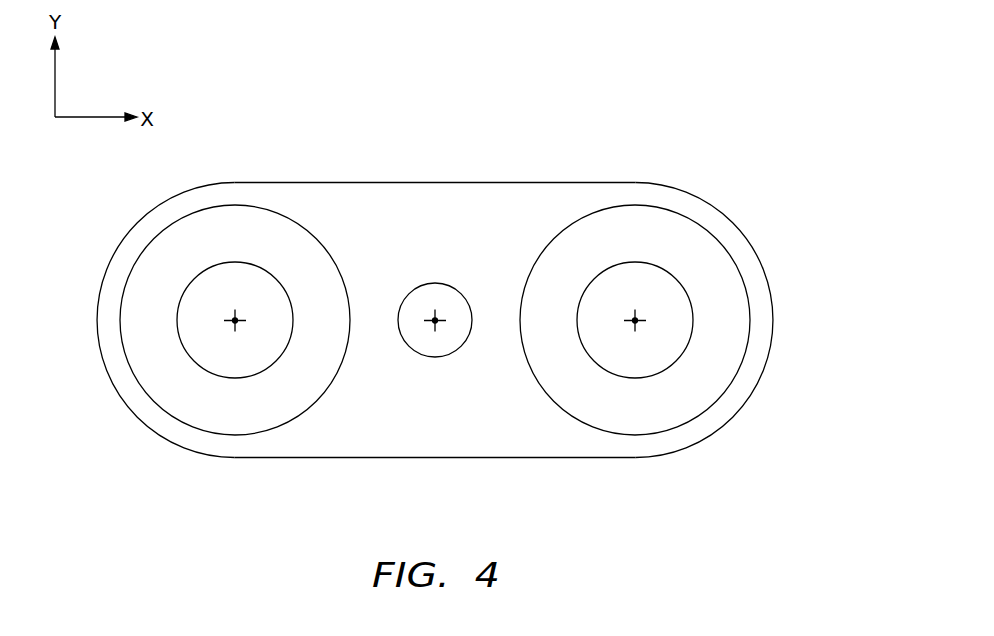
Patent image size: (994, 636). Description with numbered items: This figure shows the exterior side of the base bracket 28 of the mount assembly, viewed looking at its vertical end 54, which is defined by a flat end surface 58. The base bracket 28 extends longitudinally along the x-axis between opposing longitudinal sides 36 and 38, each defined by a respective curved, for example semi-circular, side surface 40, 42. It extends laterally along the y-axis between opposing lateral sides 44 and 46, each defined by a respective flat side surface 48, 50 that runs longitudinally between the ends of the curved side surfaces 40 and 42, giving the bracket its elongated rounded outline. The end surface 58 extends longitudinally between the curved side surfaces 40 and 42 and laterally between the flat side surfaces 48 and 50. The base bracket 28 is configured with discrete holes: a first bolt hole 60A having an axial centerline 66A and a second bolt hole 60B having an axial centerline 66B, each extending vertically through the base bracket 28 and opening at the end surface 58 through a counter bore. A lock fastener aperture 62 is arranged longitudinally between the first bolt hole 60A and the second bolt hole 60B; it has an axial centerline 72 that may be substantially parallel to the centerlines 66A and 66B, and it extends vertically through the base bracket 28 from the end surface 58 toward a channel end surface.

The base bracket 28 is at (703, 128).
The base bracket longitudinal side 36 is at (744, 320).
The curved side surface 40 is at (773, 323).
The curved side surface 42 is at (127, 320).
The base bracket longitudinal side 38 is at (97, 323).
The base bracket lateral side 46 is at (435, 135).
The flat side surface 50 is at (527, 183).
The base bracket lateral side 44 is at (435, 502).
The flat side surface 48 is at (520, 458).
The base bracket vertical end 54 is at (435, 317).
The end surface 58 is at (368, 433).
The first bolt hole 60A is at (615, 298).
The second bolt hole 60B is at (214, 298).
The axial centerline 66A is at (636, 321).
The axial centerline 66B is at (235, 321).
The lock fastener aperture 62 is at (435, 293).
The axial centerline 72 is at (428, 332).